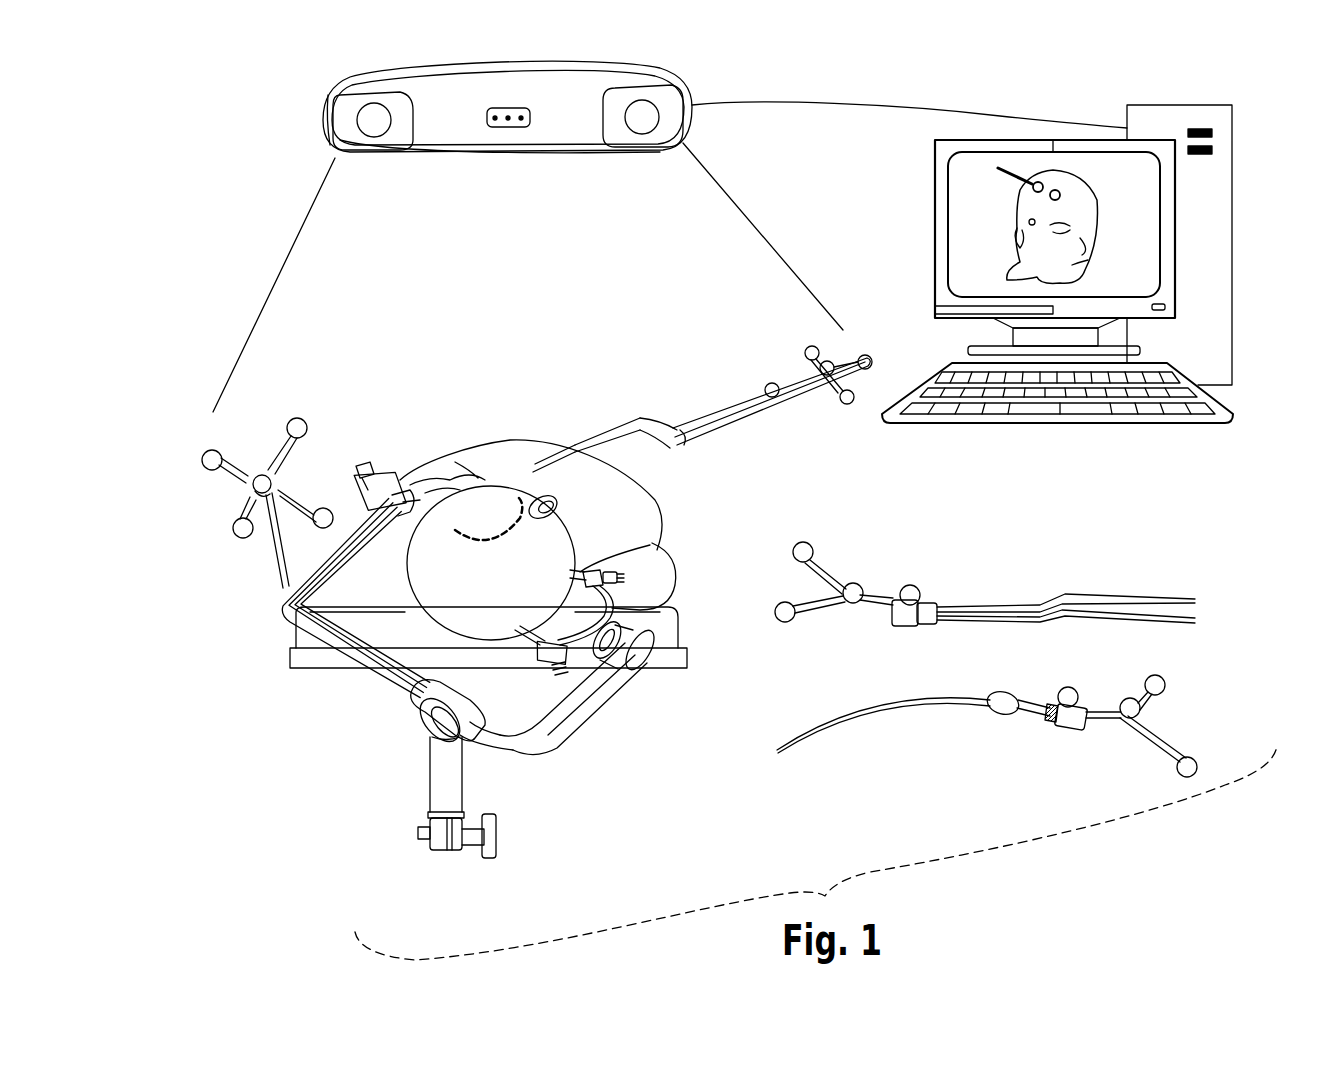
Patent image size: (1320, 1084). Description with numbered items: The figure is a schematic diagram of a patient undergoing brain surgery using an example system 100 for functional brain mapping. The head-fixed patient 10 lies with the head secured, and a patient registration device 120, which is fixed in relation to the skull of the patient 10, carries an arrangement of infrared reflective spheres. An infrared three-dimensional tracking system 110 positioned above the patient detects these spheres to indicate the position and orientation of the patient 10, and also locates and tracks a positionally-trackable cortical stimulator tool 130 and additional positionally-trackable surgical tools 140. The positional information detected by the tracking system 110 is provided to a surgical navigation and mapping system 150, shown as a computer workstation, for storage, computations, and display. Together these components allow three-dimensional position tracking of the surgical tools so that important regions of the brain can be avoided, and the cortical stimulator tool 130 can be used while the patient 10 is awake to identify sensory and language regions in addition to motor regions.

The system 100 is at (186, 94).
The IR 3D tracking system 110 is at (442, 157).
The surgical navigation and mapping system 150 is at (930, 162).
The patient 10 is at (518, 442).
The patient registration device 120 is at (208, 480).
The cortical stimulator tool 130 is at (708, 416).
The surgical tools 140 is at (1215, 572).